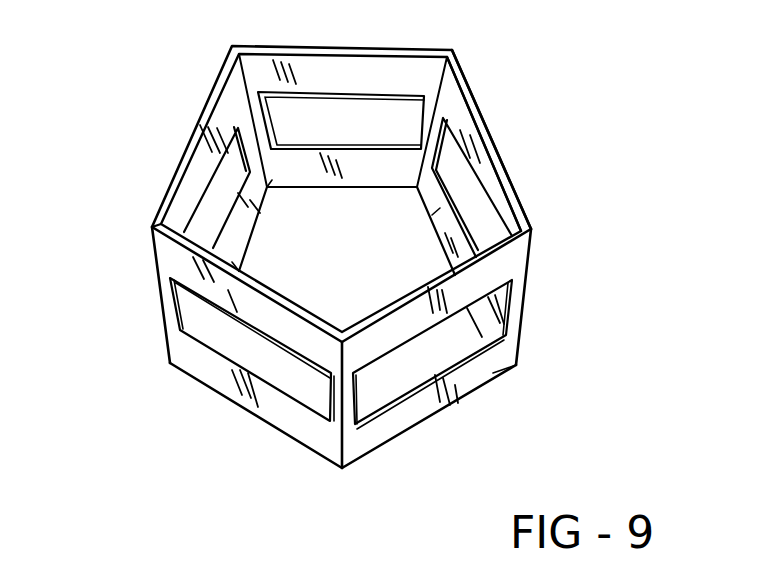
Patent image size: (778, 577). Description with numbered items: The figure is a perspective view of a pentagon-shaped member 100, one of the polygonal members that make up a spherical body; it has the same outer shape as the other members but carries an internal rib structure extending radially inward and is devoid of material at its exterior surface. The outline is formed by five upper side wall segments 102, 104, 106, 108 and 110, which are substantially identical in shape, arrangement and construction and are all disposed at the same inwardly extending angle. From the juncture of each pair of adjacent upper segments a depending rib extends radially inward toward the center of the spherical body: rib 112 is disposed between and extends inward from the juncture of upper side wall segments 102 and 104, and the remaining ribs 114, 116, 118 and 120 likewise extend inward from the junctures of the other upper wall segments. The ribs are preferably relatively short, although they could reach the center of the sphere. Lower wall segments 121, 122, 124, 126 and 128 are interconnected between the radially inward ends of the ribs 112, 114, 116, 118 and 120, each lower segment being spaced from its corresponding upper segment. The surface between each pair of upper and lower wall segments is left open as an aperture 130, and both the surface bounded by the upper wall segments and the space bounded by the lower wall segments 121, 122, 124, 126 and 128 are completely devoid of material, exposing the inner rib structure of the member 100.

The pentagon-shaped member 100 is at (110, 125).
The upper side wall segment 102 is at (333, 72).
The upper side wall segment 104 is at (190, 177).
The upper side wall segment 106 is at (187, 265).
The upper side wall segment 108 is at (385, 325).
The upper side wall segment 110 is at (478, 142).
The depending rib 112 is at (250, 130).
The depending rib 114 is at (164, 312).
The depending rib 116 is at (347, 405).
The depending rib 118 is at (517, 307).
The depending rib 120 is at (430, 100).
The lower wall segment 121 is at (278, 172).
The lower wall segment 122 is at (230, 250).
The lower wall segment 124 is at (287, 423).
The lower wall segment 126 is at (493, 373).
The lower wall segment 128 is at (432, 215).
The aperture 130 is at (350, 148).